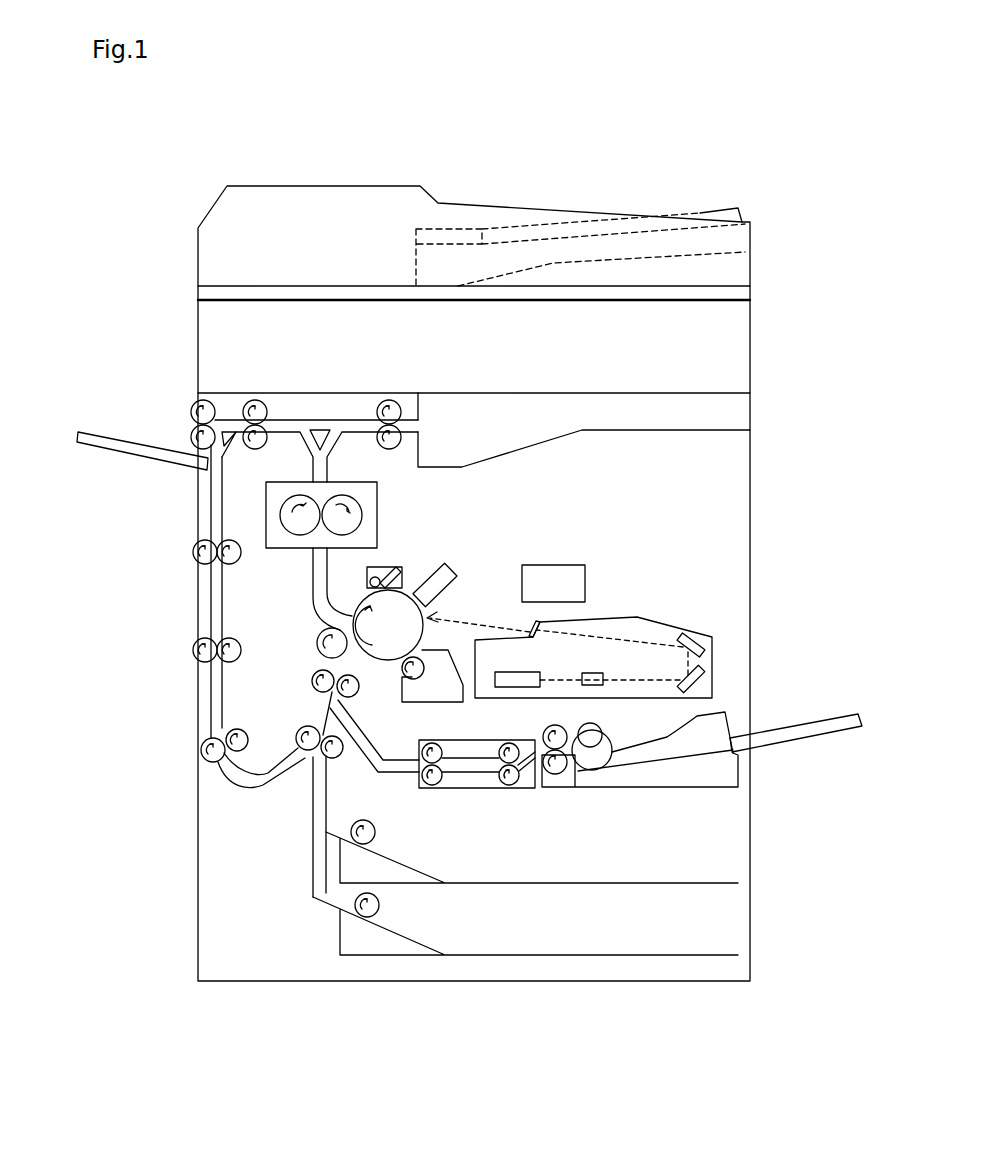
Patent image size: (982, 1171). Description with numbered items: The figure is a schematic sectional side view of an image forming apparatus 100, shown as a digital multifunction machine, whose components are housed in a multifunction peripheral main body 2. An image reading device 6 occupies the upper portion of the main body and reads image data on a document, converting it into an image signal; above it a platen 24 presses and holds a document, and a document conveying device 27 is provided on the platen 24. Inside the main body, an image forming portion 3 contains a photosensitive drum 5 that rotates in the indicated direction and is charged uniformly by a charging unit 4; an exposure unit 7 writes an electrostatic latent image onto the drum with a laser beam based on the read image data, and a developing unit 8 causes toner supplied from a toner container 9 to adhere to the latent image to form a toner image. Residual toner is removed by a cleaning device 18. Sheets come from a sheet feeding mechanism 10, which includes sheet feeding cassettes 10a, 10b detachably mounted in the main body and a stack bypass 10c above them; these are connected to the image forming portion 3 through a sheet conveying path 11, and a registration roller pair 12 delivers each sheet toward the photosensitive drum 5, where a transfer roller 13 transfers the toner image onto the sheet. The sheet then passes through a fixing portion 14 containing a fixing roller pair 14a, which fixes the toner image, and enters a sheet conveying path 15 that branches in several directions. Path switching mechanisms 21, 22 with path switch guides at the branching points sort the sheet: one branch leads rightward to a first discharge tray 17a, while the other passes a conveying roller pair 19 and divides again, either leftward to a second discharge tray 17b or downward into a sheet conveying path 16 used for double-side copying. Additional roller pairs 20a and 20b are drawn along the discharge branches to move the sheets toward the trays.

The image forming apparatus 100 is at (509, 539).
The multifunction peripheral main body 2 is at (752, 487).
The document conveying device 27 is at (218, 208).
The platen 24 is at (752, 290).
The image reading device 6 is at (198, 345).
The first discharge tray 17a is at (584, 430).
The second discharge tray 17b is at (120, 440).
The sheet conveying path 15 is at (305, 470).
The path switching mechanism 21 is at (318, 428).
The path switching mechanism 22 is at (205, 462).
The ejection roller pair 20b is at (192, 424).
The conveying roller pair 19 is at (258, 404).
The ejection roller pair 20a is at (390, 418).
The fixing portion 14 is at (300, 514).
The fixing roller pair 14a is at (357, 510).
The sheet conveying path 16 is at (212, 592).
The registration roller pair 12 is at (318, 703).
The sheet conveying path 11 is at (313, 780).
The transfer roller 13 is at (320, 635).
The image forming portion 3 is at (444, 615).
The photosensitive drum 5 is at (386, 652).
The cleaning device 18 is at (388, 567).
The charging unit 4 is at (453, 583).
The developing unit 8 is at (432, 692).
The toner container 9 is at (555, 580).
The exposure unit 7 is at (622, 628).
The sheet feeding mechanism 10 is at (589, 809).
The sheet feeding cassette 10a is at (725, 862).
The sheet feeding cassette 10b is at (715, 932).
The stack bypass 10c is at (770, 716).